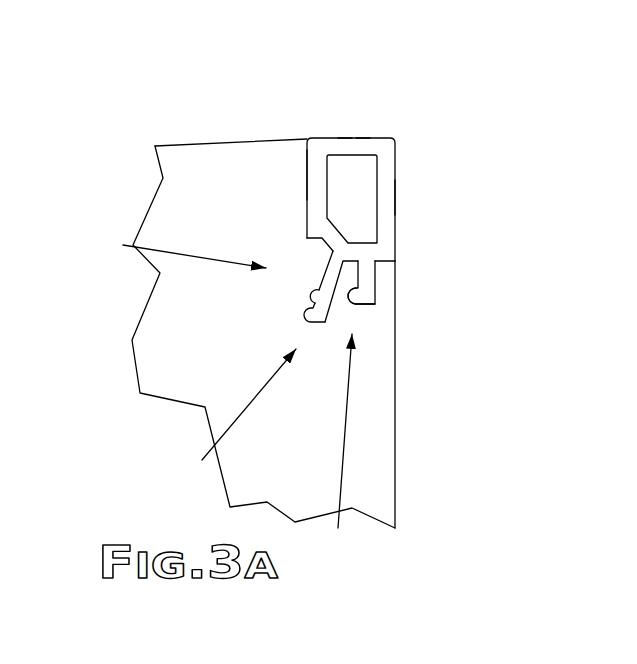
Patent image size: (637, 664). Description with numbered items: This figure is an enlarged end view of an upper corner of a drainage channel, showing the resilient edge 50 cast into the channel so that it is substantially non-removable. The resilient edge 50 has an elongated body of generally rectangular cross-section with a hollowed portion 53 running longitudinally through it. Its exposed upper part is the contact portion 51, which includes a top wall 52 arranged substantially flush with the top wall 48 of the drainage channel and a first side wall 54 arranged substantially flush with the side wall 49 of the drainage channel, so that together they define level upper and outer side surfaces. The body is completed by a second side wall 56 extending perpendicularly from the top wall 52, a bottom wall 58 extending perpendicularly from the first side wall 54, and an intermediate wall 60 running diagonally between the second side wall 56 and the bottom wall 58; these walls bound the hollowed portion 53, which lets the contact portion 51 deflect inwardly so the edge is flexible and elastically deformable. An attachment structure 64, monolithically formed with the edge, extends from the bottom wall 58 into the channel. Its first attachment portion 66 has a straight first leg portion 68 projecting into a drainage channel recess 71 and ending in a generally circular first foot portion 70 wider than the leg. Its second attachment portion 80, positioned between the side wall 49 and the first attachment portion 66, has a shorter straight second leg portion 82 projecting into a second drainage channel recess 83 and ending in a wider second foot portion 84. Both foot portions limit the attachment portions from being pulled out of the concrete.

The top wall 48 is at (243, 139).
The side wall 49 is at (28, 0).
The resilient edge 50 is at (390, 138).
The contact portion 51 is at (345, 138).
The top wall 52 is at (363, 138).
The hollowed portion 53 is at (329, 192).
The first side wall 54 is at (397, 195).
The second side wall 56 is at (305, 160).
The bottom wall 58 is at (386, 262).
The intermediate wall 60 is at (318, 248).
The attachment structure 64 is at (179, 249).
The first attachment portion 66 is at (233, 423).
The first leg portion 68 is at (322, 287).
The first foot portion 70 is at (305, 315).
The drainage channel recess 71 is at (315, 304).
The second attachment portion 80 is at (338, 451).
The second leg portion 82 is at (376, 282).
The second drainage channel recess 83 is at (370, 298).
The second foot portion 84 is at (367, 307).